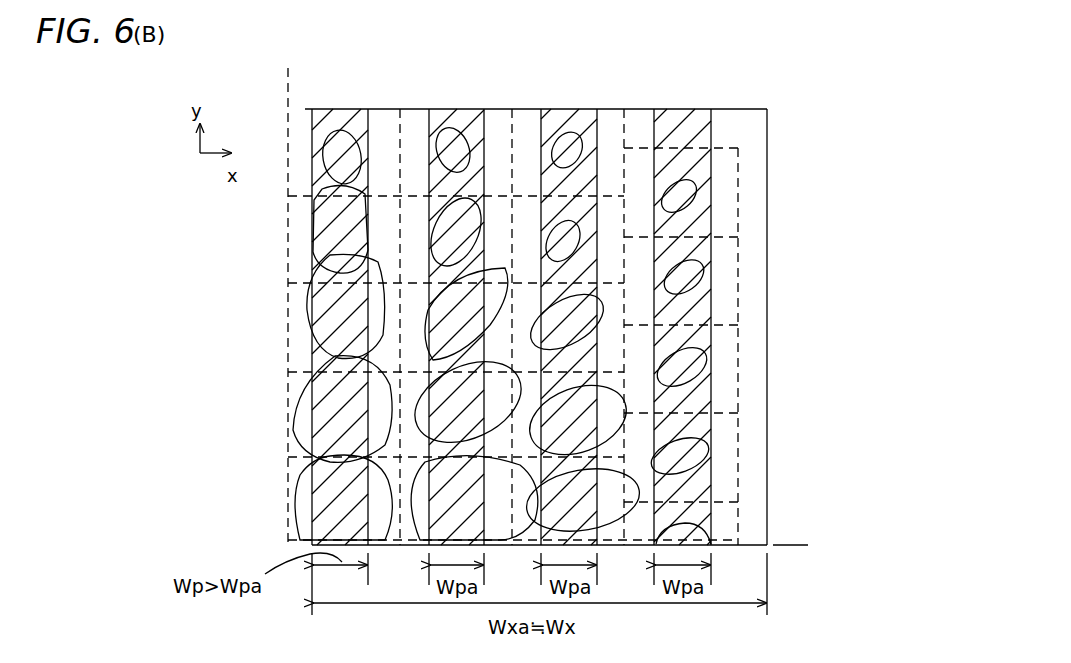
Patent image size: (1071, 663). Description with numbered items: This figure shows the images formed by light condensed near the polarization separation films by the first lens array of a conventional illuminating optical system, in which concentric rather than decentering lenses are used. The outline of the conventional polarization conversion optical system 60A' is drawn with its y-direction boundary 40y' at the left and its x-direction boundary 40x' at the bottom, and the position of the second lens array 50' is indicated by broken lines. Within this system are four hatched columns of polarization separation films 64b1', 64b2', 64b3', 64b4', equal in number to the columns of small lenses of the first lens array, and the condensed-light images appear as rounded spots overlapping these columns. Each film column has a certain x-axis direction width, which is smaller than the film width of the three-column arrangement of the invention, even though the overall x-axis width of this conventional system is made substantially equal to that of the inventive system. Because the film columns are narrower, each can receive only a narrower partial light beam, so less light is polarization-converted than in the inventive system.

The y-direction edge of printing region 40y' is at (319, 296).
The x-direction edge of printing region 40x' is at (583, 519).
The polarization separation film 64b1' is at (348, 309).
The polarization separation film 64b2' is at (470, 309).
The polarization separation film 64b3' is at (582, 309).
The polarization separation film 64b4' is at (699, 309).
The second lens array 50' is at (681, 288).
The polarization conversion optical system 60A' is at (612, 289).